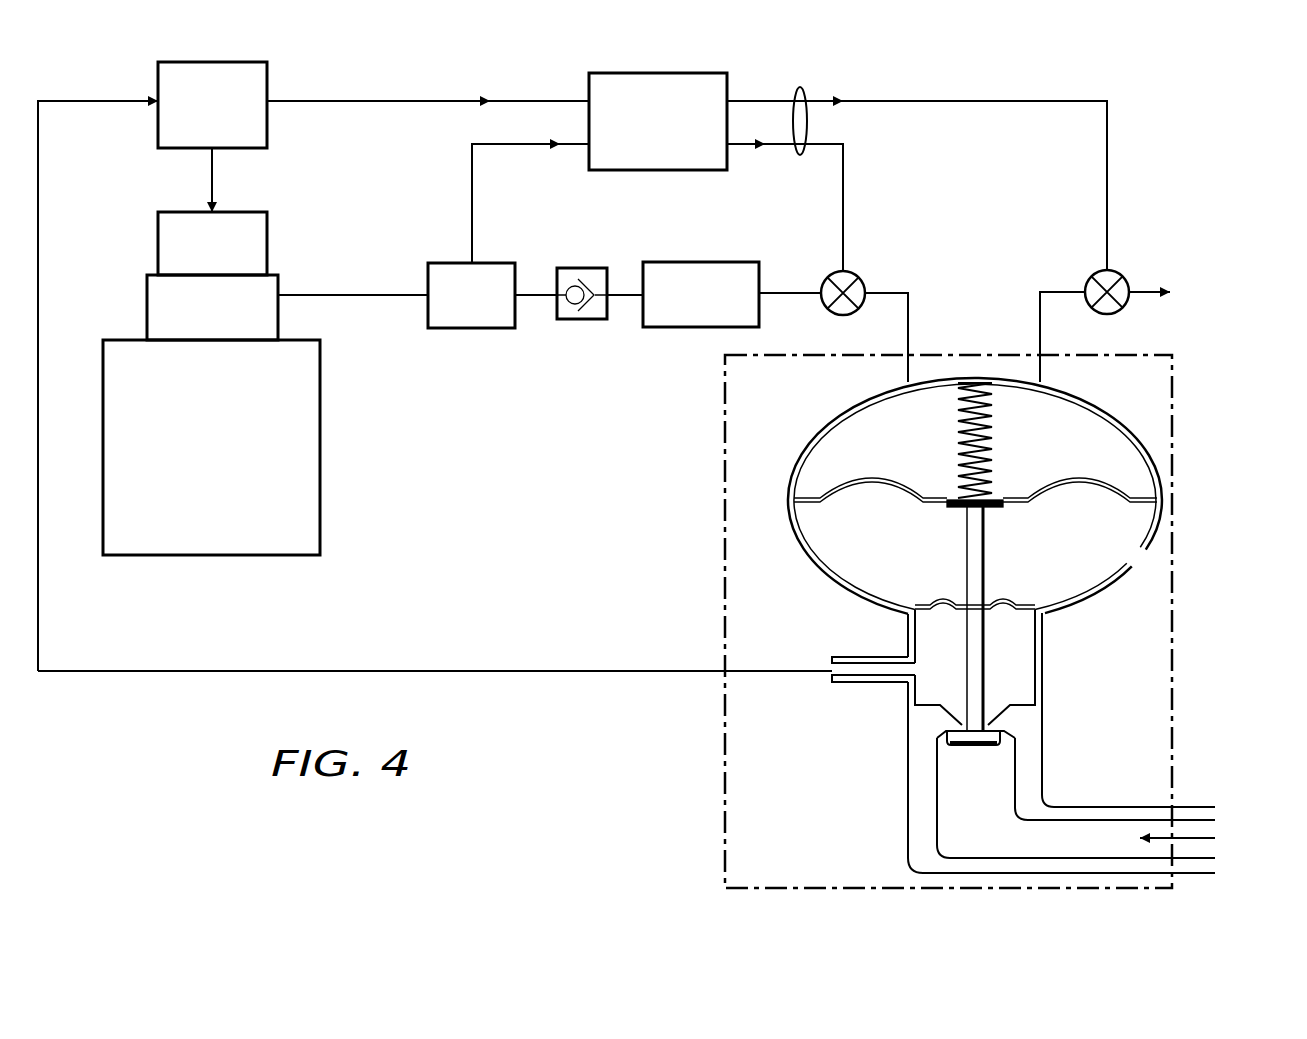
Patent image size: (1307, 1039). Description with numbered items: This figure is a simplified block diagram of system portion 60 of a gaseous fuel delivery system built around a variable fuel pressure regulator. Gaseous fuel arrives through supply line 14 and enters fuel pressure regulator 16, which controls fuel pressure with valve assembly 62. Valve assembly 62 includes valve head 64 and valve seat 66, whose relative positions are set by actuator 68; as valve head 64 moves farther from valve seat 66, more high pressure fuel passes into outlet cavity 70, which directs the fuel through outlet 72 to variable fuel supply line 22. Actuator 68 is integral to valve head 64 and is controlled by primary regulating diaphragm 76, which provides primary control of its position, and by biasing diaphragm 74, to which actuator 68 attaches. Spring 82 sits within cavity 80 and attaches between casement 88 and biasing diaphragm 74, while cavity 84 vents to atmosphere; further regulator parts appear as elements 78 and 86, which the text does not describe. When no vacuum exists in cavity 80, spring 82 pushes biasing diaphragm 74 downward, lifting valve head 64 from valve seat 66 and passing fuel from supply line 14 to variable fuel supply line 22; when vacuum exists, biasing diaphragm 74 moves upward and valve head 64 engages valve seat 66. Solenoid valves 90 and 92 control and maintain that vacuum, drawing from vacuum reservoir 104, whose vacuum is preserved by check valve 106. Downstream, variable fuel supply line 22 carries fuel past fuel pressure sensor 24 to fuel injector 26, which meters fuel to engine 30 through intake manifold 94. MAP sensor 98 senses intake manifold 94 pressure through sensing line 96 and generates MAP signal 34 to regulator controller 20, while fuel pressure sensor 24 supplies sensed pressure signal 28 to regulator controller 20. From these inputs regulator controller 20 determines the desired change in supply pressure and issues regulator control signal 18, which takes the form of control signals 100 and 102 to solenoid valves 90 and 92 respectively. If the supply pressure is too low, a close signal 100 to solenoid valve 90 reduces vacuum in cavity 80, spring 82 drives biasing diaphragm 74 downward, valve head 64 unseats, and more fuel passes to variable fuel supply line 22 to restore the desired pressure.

The supply line 14 is at (1190, 808).
The fuel pressure regulator 16 is at (780, 869).
The regulator control signal 18 is at (800, 158).
The regulator controller 20 is at (588, 90).
The variable fuel supply line 22 is at (210, 181).
The fuel pressure sensor 24 is at (157, 72).
The fuel injector 26 is at (157, 234).
The sensed pressure signal 28 is at (441, 99).
The engine 30 is at (198, 481).
The MAP signal 34 is at (471, 166).
The system portion 60 is at (1240, 76).
The valve assembly 62 is at (1017, 758).
The valve head 64 is at (975, 748).
The valve seat 66 is at (1003, 731).
The actuator 68 is at (985, 642).
The outlet cavity 70 is at (953, 673).
The outlet 72 is at (866, 684).
The biasing diaphragm 74 is at (1013, 496).
The primary regulating diaphragm 76 is at (990, 602).
The stem rod 78 is at (965, 556).
The cavity 80 is at (885, 450).
The spring 82 is at (996, 429).
The cavity 84 is at (1045, 548).
The control chamber port 86 is at (1139, 558).
The casement 88 is at (1103, 410).
The solenoid valve 90 is at (851, 272).
The solenoid valve 92 is at (1092, 275).
The intake manifold 94 is at (146, 304).
The sensing line 96 is at (367, 297).
The MAP sensor 98 is at (450, 262).
The control signal 100 is at (845, 175).
The control signal 102 is at (1108, 128).
The vacuum reservoir 104 is at (705, 262).
The check valve 106 is at (580, 320).